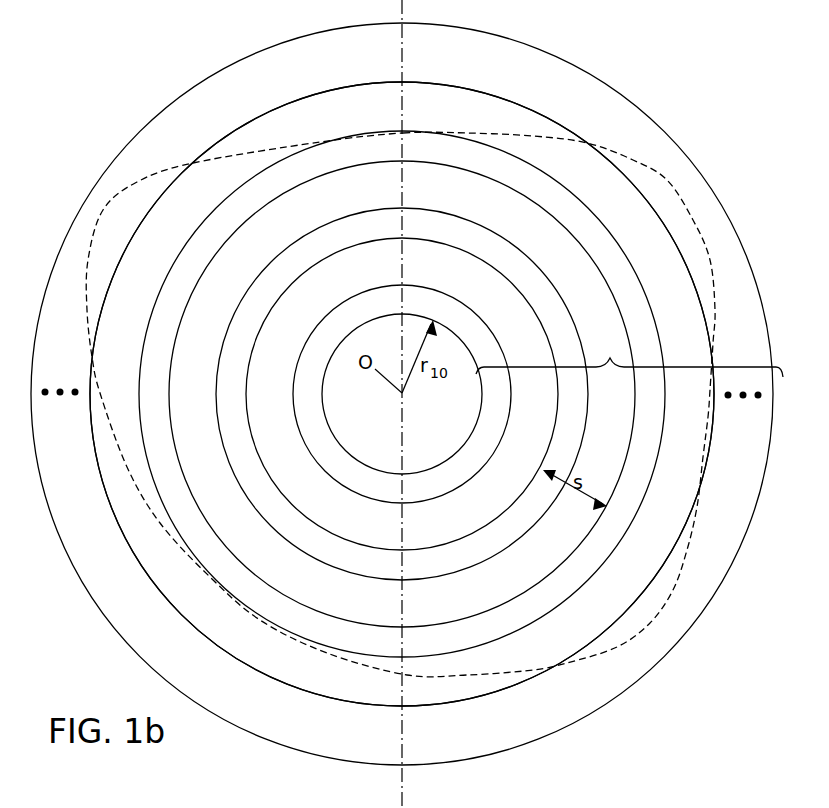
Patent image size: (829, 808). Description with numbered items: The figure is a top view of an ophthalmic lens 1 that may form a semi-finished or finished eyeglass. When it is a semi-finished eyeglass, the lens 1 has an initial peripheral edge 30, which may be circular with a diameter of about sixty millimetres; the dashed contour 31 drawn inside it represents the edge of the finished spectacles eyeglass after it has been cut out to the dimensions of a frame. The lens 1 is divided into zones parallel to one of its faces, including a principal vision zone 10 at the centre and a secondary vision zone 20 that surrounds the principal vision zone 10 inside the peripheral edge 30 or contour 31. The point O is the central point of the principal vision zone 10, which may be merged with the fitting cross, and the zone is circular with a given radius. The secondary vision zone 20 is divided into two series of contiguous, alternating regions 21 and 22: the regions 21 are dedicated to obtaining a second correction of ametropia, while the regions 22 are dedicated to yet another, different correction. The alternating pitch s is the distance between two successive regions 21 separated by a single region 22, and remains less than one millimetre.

The ophthalmic lens 1 is at (183, 57).
The principal vision zone 10 is at (393, 443).
The secondary vision zone 20 is at (629, 356).
The regions of the first series 21 is at (545, 403).
The regions of the second series 22 is at (509, 403).
The initial peripheral edge 30 is at (743, 247).
The contour 31 is at (667, 180).